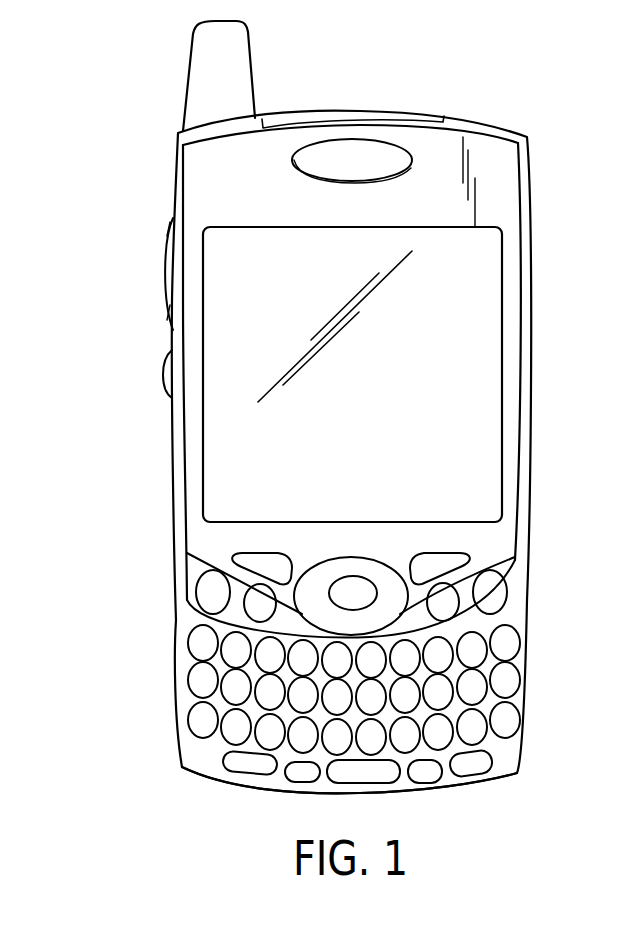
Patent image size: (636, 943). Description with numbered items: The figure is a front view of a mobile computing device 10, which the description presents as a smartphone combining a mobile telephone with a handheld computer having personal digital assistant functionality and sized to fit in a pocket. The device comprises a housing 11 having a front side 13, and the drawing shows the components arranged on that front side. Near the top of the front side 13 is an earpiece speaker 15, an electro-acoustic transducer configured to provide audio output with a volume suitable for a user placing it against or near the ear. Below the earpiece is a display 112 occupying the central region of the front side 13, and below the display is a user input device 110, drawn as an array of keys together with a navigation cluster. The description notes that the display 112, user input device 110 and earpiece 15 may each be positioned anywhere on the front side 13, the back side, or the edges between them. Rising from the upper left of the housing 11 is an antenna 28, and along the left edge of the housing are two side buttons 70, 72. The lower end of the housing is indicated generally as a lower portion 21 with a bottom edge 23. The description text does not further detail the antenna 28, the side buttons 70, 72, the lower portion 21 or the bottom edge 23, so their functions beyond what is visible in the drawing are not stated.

The handheld mobile device 10 is at (493, 82).
The housing 11 is at (497, 165).
The front side 13 is at (244, 197).
The earpiece speaker 15 is at (352, 155).
The lower portion of device 21 is at (455, 810).
The bottom edge of housing 23 is at (510, 773).
The antenna 28 is at (255, 80).
The side button 70 is at (167, 250).
The side button 72 is at (163, 370).
The user input device 110 is at (505, 682).
The display 112 is at (482, 328).